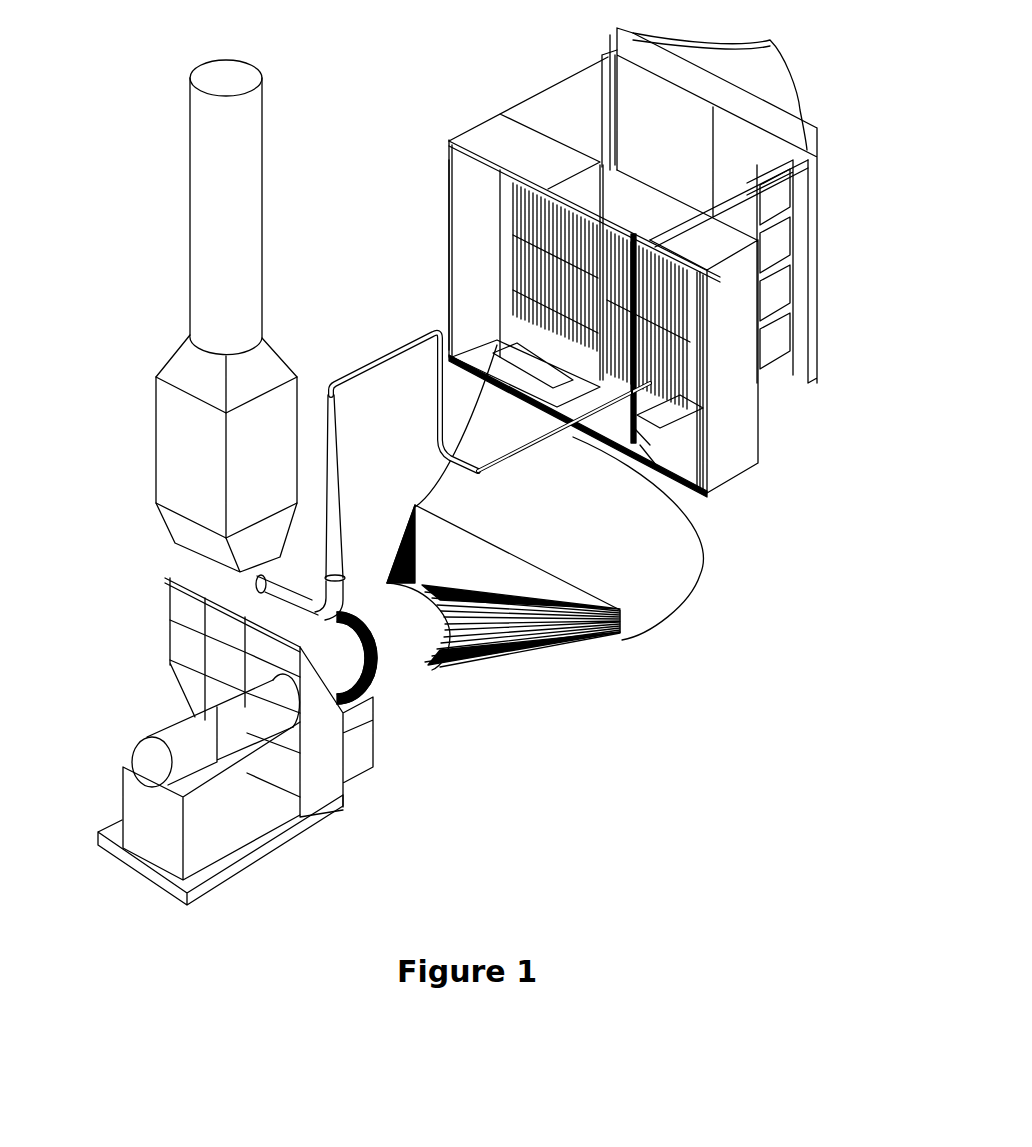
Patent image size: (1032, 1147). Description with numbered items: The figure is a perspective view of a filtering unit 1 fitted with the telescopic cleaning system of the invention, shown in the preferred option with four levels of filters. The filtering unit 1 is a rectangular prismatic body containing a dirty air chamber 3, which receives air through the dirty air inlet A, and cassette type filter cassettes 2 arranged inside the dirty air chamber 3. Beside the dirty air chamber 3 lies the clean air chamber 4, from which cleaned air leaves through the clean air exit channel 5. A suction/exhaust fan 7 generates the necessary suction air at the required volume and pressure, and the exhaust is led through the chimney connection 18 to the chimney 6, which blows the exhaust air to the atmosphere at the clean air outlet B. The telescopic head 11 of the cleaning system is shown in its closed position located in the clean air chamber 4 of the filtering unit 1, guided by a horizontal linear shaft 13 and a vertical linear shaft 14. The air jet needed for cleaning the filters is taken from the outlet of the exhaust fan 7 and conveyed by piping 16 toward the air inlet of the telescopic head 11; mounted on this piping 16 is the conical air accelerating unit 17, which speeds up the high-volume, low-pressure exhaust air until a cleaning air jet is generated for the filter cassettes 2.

The filter unit 1 is at (372, 96).
The filter cassettes 2 is at (518, 232).
The dirty air chamber 3 is at (548, 85).
The clean air chamber 4 is at (468, 258).
The clean air exit channel 5 is at (513, 358).
The chimney 6 is at (203, 272).
The suction/exhaust fan 7 is at (195, 720).
The telescopic head 11 is at (688, 323).
The horizontal linear shaft 13 is at (643, 437).
The vertical linear shaft 14 is at (647, 467).
The piping 16 is at (380, 362).
The air accelerating unit 17 is at (340, 497).
The chimney connection 18 is at (252, 582).
The dirty air inlet A is at (790, 53).
The clean air outlet B is at (228, 78).